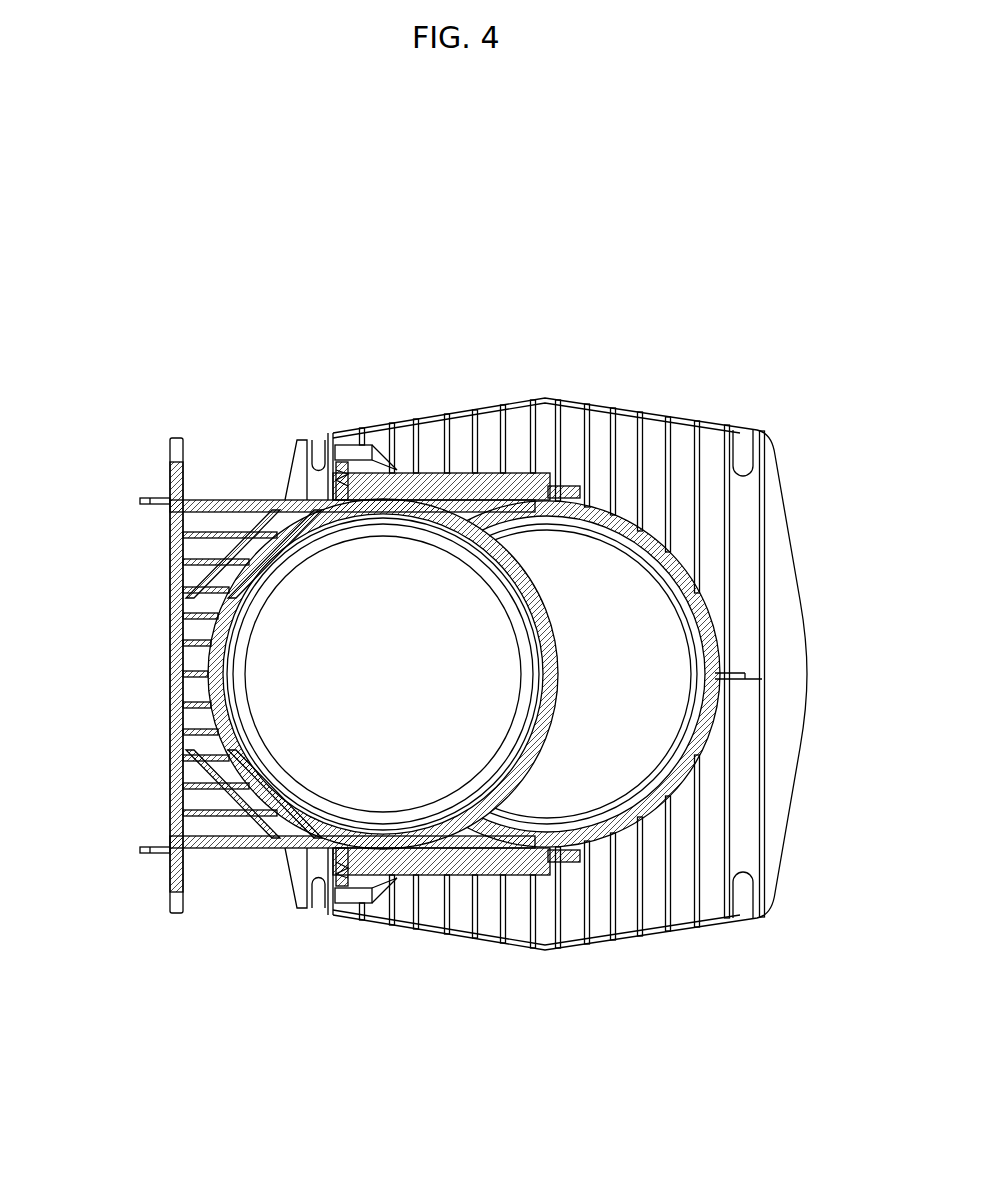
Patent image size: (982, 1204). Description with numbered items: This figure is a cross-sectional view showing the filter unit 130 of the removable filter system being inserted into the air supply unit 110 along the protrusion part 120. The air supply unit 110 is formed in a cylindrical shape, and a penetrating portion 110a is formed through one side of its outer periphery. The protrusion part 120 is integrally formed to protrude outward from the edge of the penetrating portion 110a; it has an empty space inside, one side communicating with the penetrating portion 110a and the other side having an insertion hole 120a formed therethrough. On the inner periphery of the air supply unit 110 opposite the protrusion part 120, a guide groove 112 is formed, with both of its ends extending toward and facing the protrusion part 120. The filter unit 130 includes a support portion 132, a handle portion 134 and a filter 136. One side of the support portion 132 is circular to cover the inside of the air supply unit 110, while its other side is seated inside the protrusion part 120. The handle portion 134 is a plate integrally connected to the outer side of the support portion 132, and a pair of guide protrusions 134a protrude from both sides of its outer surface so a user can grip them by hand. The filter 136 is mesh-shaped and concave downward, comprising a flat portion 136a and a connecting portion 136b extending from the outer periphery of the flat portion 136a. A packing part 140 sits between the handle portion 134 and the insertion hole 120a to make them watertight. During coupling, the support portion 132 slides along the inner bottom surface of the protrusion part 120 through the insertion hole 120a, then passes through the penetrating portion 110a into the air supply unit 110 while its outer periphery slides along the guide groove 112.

The air supply unit 110 is at (650, 535).
The penetrating portion 110a is at (518, 905).
The guide groove 112 is at (700, 635).
The protrusion part 120 is at (482, 883).
The insertion hole 120a is at (297, 445).
The filter unit 130 is at (168, 402).
The support portion 132 is at (262, 850).
The handle portion 134 is at (168, 590).
The guide protrusions 134a is at (147, 501).
The filter 136 is at (485, 343).
The flat portion 136a is at (417, 597).
The connecting portion 136b is at (472, 548).
The packing part 140 is at (338, 468).